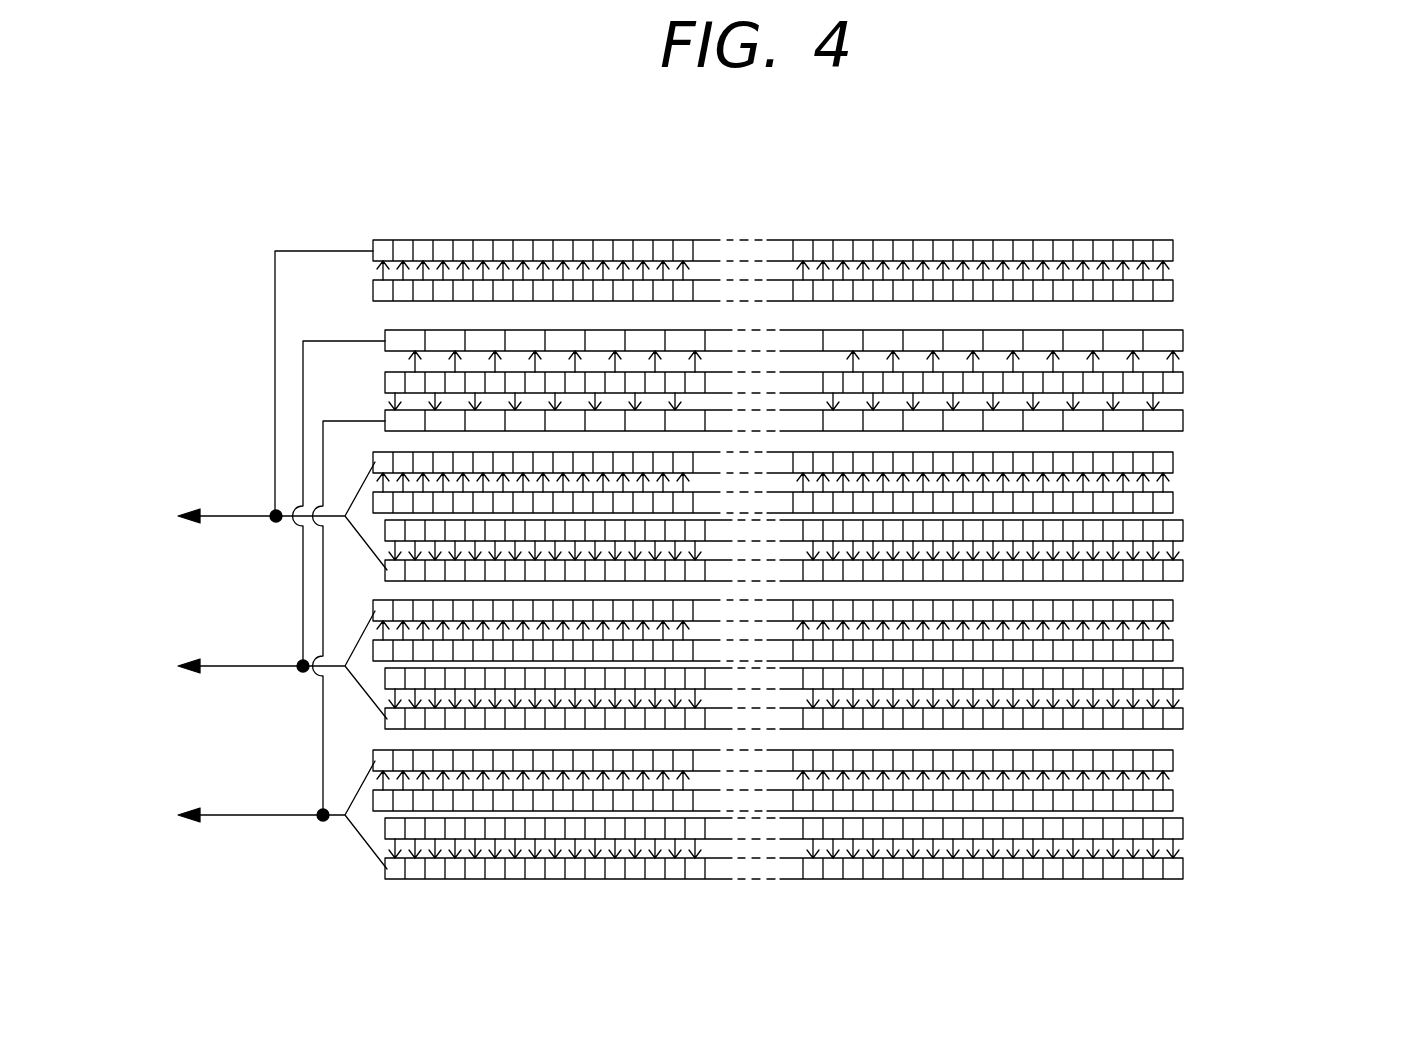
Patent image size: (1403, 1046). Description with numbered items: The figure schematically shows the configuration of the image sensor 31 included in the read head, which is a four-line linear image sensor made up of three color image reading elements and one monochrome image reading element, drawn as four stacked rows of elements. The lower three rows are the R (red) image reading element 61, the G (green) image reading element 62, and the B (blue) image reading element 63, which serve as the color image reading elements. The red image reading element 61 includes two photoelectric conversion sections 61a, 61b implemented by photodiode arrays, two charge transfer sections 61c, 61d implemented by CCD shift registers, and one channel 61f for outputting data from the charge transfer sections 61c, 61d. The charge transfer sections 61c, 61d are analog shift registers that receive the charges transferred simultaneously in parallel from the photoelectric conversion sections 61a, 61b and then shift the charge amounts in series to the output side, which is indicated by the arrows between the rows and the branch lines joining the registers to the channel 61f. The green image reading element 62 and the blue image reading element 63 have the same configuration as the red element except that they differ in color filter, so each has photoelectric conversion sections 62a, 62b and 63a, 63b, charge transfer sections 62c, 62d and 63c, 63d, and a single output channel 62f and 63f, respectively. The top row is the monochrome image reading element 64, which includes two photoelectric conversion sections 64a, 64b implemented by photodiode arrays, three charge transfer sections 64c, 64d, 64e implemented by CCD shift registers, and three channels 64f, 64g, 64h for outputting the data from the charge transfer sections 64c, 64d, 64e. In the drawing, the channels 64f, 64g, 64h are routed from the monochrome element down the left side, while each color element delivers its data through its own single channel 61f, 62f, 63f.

The image sensor 31 is at (1008, 206).
The R (red) image reading element 61 is at (862, 804).
The photoelectric conversion section 61a is at (828, 789).
The photoelectric conversion section 61b is at (841, 819).
The charge transfer section 61c is at (827, 752).
The charge transfer section 61d is at (841, 855).
The channel 61f is at (282, 803).
The G (green) image reading element 62 is at (862, 654).
The photoelectric conversion section 62a is at (828, 639).
The photoelectric conversion section 62b is at (841, 669).
The charge transfer section 62c is at (827, 602).
The charge transfer section 62d is at (841, 705).
The channel 62f is at (282, 653).
The B (blue) image reading element 63 is at (862, 506).
The photoelectric conversion section 63a is at (828, 491).
The photoelectric conversion section 63b is at (841, 521).
The charge transfer section 63c is at (827, 454).
The charge transfer section 63d is at (841, 557).
The channel 63f is at (282, 505).
The monochrome image reading element 64 is at (862, 326).
The photoelectric conversion section 64a is at (828, 282).
The photoelectric conversion section 64b is at (1185, 375).
The charge transfer section 64c is at (827, 243).
The charge transfer section 64d is at (1185, 334).
The charge transfer section 64e is at (1185, 406).
The channel 64f is at (319, 349).
The channel 64g is at (339, 468).
The channel 64h is at (349, 584).